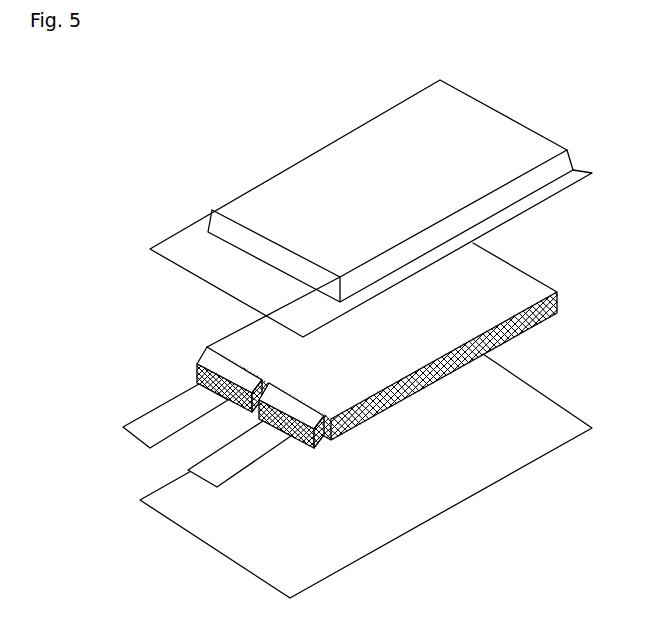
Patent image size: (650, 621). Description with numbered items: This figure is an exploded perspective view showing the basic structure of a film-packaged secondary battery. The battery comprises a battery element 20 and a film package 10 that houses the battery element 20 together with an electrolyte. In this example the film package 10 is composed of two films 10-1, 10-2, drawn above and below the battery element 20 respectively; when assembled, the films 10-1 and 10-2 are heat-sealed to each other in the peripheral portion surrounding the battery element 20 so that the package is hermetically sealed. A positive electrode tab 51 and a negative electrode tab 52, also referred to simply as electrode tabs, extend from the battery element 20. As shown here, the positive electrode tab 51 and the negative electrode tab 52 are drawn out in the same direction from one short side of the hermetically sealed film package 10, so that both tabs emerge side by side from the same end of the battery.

The film package 10 is at (380, 201).
The film 10-1 is at (549, 141).
The film 10-2 is at (550, 456).
The battery element 20 is at (523, 269).
The positive electrode tab 51 is at (123, 426).
The negative electrode tab 52 is at (190, 470).